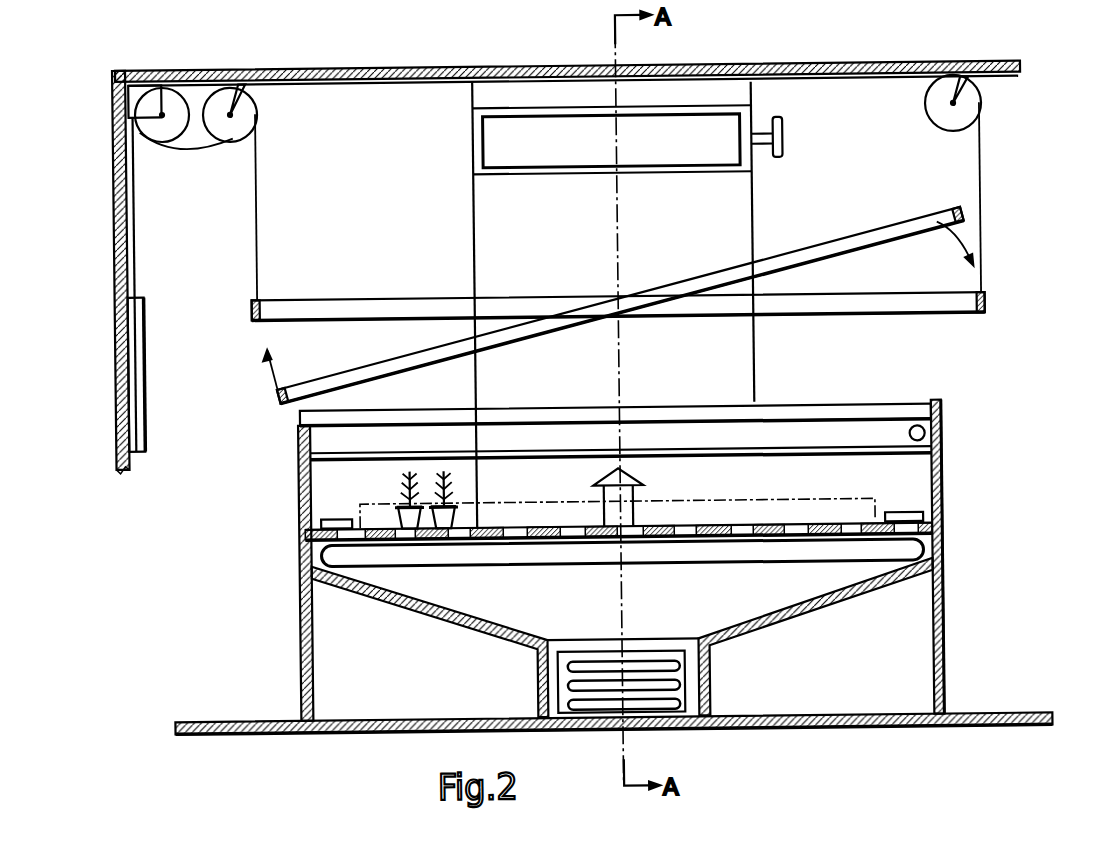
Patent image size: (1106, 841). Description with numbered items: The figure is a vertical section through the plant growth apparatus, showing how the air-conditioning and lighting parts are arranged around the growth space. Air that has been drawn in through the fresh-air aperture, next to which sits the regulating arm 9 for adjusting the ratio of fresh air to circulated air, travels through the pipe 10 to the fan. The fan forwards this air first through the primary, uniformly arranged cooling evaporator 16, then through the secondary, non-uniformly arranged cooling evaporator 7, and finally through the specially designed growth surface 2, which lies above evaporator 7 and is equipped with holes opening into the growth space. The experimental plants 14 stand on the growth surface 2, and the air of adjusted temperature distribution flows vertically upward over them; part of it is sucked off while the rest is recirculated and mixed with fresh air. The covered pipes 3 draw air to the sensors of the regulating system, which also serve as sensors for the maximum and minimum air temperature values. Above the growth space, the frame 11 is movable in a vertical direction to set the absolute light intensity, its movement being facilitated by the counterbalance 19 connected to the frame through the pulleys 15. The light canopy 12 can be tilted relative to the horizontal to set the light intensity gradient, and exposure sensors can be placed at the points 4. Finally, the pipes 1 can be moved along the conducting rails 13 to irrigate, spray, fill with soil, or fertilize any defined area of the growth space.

The pipes 1 is at (930, 411).
The growth surface 2 is at (943, 544).
The covered pipes 3 is at (645, 511).
The points 4 is at (321, 517).
The secondary cooling evaporator 7 is at (360, 581).
The regulating arm 9 is at (788, 113).
The pipe 10 is at (512, 198).
The frame 11 is at (941, 304).
The light canopy 12 is at (949, 232).
The conducting rails 13 is at (936, 437).
The experimental plants 14 is at (384, 553).
The pulleys 15 is at (230, 129).
The primary cooling evaporator 16 is at (669, 684).
The counterbalance 19 is at (138, 335).